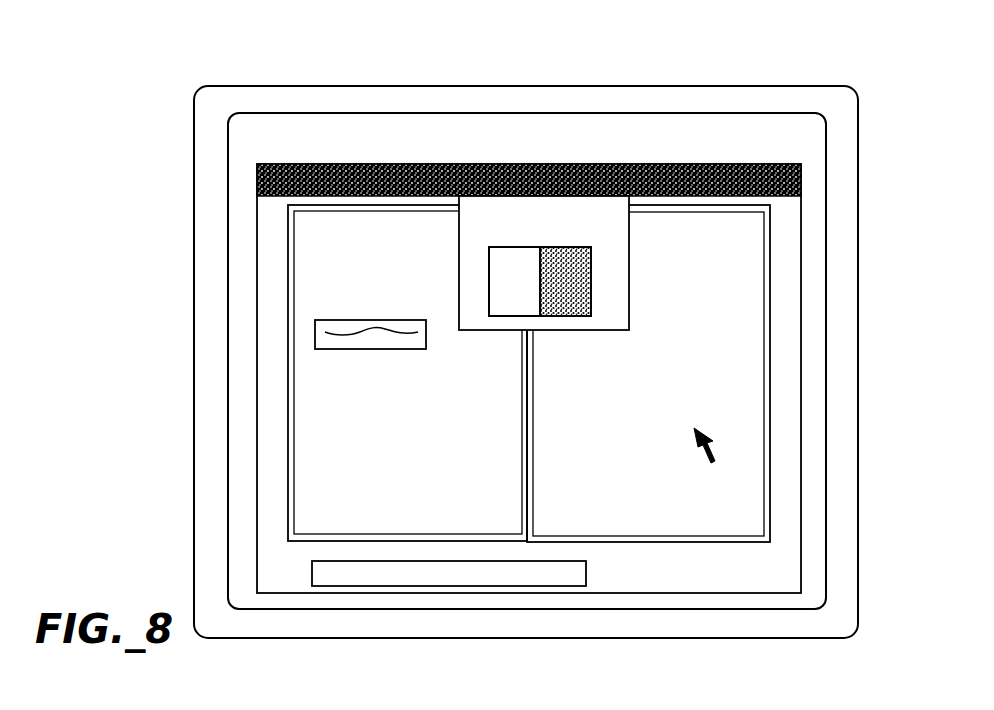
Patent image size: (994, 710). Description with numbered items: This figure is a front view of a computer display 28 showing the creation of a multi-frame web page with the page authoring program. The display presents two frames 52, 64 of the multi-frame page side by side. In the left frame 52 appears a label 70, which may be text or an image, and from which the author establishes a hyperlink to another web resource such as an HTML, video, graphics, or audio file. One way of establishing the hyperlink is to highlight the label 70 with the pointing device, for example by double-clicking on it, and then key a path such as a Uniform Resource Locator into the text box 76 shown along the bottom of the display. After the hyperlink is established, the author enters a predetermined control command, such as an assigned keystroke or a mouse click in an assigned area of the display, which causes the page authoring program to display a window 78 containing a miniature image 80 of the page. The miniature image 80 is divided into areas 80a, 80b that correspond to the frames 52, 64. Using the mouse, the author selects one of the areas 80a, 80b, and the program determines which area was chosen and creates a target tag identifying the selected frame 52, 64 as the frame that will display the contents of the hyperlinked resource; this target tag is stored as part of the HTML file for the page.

The display screen 28 is at (653, 86).
The frame 52 is at (417, 487).
The frame 64 is at (662, 487).
The label 70 is at (372, 320).
The text box 76 is at (587, 573).
The window 78 is at (630, 290).
The miniature image 80 is at (505, 232).
The area 80a is at (513, 317).
The area 80b is at (563, 317).